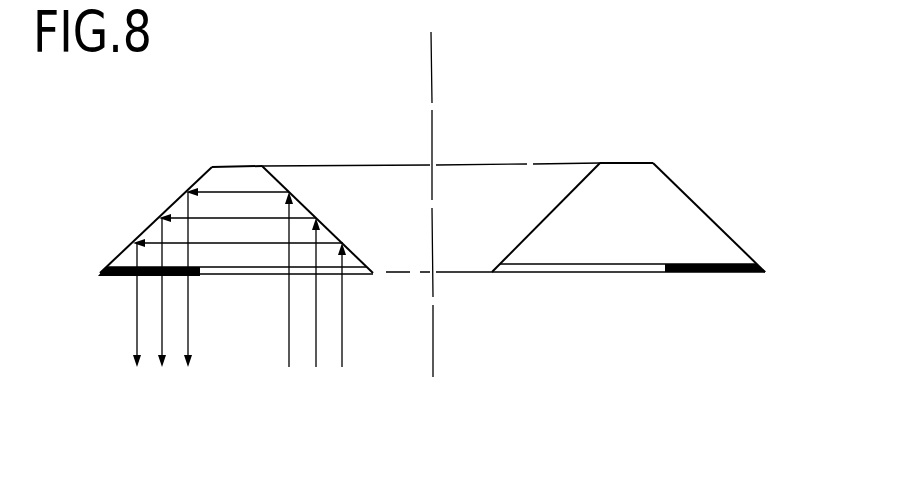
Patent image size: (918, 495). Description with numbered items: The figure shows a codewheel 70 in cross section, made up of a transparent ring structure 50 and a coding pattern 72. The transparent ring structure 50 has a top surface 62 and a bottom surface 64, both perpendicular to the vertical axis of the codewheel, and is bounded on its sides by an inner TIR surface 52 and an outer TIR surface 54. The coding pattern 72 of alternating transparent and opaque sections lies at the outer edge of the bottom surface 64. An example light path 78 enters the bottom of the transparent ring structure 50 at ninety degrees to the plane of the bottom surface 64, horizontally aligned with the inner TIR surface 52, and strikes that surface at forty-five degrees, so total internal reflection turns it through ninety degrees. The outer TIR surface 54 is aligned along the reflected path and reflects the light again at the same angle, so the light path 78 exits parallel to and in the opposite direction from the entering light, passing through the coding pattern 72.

The codewheel 70 is at (771, 111).
The transparent ring structure 50 is at (208, 178).
The inner TIR surface 52 is at (303, 205).
The outer TIR surface 54 is at (150, 228).
The top surface 62 is at (235, 167).
The bottom surface 64 is at (233, 278).
The coding pattern 72 is at (117, 277).
The light path 78 is at (342, 383).